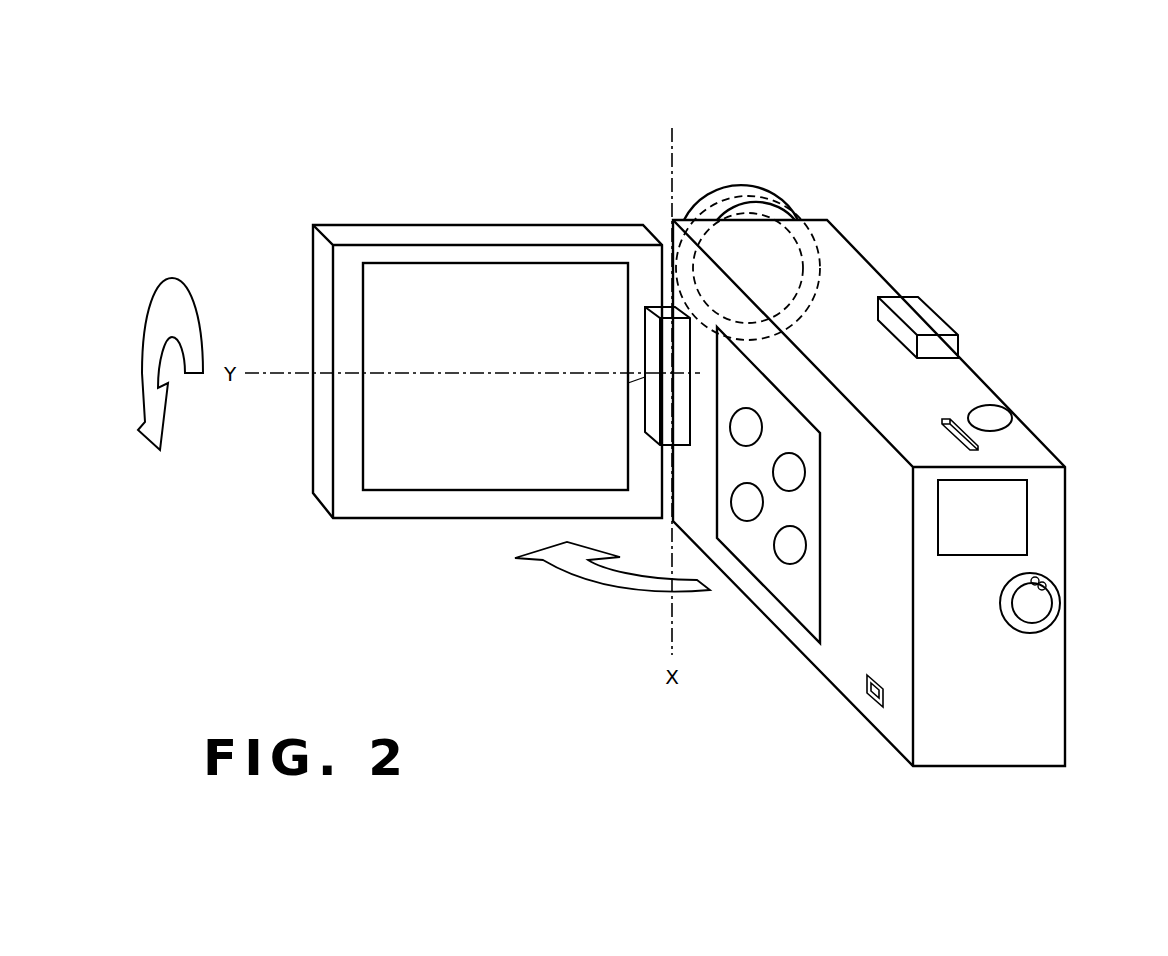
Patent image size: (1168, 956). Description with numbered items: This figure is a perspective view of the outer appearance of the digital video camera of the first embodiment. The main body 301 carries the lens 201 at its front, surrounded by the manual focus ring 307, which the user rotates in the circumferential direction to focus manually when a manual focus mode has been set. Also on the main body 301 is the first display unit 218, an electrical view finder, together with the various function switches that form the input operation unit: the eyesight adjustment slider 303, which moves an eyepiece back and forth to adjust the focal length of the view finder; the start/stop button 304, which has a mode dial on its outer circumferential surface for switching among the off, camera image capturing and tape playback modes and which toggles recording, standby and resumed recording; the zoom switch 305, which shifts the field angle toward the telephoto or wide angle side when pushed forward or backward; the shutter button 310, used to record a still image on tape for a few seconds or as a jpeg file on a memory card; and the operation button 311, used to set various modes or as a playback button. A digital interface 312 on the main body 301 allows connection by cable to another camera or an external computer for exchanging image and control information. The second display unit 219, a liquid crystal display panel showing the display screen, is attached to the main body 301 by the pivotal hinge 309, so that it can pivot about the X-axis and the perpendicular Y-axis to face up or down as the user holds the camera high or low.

The lens 201 is at (785, 252).
The first display unit 218 is at (1012, 525).
The second display unit 219 is at (478, 490).
The main body 301 is at (1020, 728).
The eyesight adjustment slider 303 is at (988, 440).
The start/stop button 304 is at (1032, 610).
The zoom switch 305 is at (922, 320).
The manual focus ring 307 is at (725, 202).
The hinge 309 is at (660, 310).
The shutter button 310 is at (990, 417).
The operation button 311 is at (790, 563).
The IEEE 1394 interface 312 is at (872, 700).